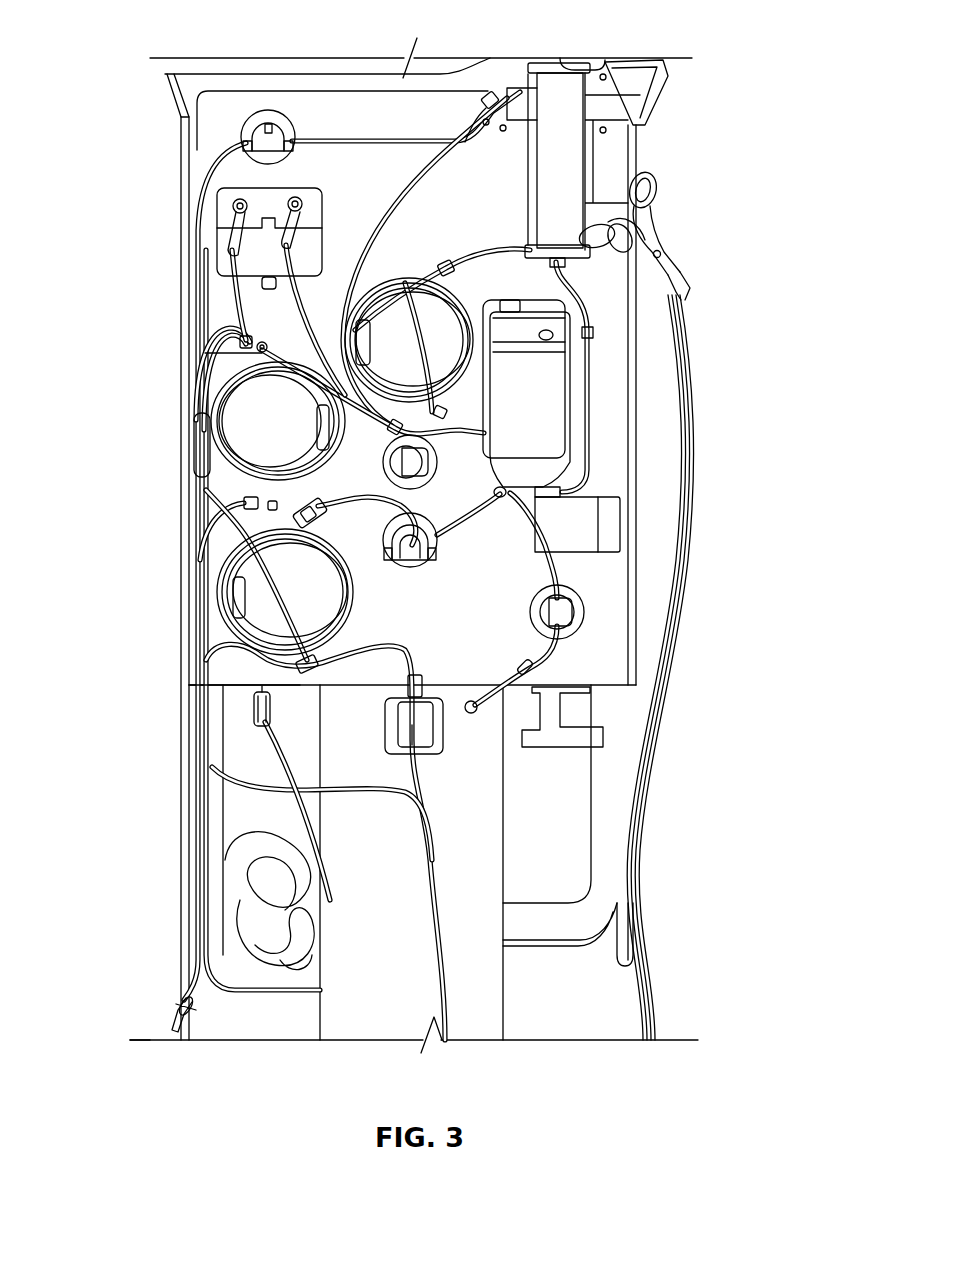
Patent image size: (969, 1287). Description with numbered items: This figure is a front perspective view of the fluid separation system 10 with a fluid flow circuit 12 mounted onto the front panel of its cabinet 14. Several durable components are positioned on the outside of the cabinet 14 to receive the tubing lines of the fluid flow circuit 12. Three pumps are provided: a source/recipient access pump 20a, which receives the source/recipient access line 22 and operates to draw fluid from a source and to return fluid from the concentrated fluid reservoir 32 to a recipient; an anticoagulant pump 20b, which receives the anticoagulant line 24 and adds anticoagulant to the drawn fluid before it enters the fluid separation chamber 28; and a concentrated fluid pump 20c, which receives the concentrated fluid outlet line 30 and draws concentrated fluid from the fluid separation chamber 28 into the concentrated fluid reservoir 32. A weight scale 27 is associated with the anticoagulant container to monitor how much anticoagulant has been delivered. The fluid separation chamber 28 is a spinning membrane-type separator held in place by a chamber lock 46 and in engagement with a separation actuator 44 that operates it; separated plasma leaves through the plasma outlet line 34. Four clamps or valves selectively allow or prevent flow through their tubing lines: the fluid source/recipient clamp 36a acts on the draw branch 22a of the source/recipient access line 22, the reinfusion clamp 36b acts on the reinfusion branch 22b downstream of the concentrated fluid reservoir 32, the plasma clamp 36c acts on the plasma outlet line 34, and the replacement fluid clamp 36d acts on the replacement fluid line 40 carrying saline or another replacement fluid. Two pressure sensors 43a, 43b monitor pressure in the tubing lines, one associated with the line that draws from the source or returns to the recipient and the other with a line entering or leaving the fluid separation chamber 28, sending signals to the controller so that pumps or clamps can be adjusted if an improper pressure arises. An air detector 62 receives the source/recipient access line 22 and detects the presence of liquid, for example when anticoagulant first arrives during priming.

The fluid separation system 10 is at (338, 982).
The fluid flow circuit 12 is at (212, 150).
The cabinet 14 is at (474, 620).
The source/recipient access pump 20a is at (260, 583).
The anticoagulant pump 20b is at (257, 422).
The concentrated fluid pump 20c is at (397, 338).
The source/recipient access line 22 is at (437, 796).
The draw branch 22a is at (387, 203).
The reinfusion branch 22b is at (437, 532).
The anticoagulant line 24 is at (247, 773).
The weight scale 27 is at (250, 717).
The fluid separation chamber 28 is at (567, 145).
The concentrated fluid outlet line 30 is at (488, 106).
The concentrated fluid reservoir 32 is at (533, 422).
The plasma outlet line 34 is at (588, 393).
The fluid source/recipient clamp 36a is at (436, 466).
The reinfusion clamp 36b is at (383, 541).
The plasma clamp 36c is at (560, 618).
The replacement fluid clamp 36d is at (264, 122).
The replacement fluid line 40 is at (407, 141).
The pressure sensor 43a is at (236, 205).
The pressure sensor 43b is at (289, 205).
The separation actuator 44 is at (597, 61).
The chamber lock 46 is at (655, 270).
The air detector 62 is at (428, 727).